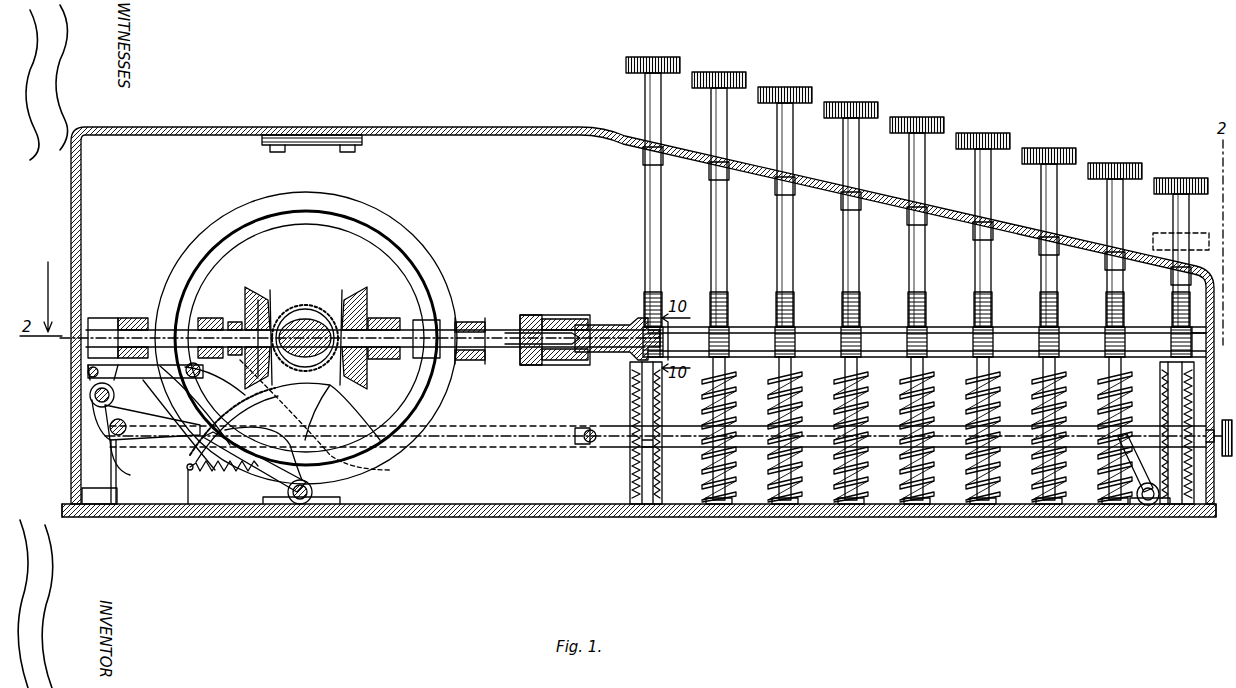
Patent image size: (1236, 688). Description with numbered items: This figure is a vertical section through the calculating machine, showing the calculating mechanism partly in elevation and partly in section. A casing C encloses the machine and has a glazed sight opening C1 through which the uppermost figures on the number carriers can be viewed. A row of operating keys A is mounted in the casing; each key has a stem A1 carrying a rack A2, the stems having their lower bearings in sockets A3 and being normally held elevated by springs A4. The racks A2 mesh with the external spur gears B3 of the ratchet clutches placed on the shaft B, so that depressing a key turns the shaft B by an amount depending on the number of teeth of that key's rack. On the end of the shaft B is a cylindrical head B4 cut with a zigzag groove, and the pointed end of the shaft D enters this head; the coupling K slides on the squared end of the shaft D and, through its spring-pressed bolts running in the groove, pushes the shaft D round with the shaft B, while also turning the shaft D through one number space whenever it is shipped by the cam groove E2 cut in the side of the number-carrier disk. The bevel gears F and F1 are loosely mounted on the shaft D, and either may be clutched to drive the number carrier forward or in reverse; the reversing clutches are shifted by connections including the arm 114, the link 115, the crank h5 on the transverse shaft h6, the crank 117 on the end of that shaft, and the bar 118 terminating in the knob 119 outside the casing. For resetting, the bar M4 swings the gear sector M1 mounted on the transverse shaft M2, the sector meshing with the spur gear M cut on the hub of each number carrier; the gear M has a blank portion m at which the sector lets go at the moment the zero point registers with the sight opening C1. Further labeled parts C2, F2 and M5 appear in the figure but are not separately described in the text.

The operating key A is at (657, 57).
The key stem A1 is at (662, 236).
The rack A2 is at (795, 283).
The socket A3 is at (648, 517).
The key spring A4 is at (725, 418).
The shaft B is at (752, 326).
The external spur gear B3 is at (796, 326).
The cylindrical head B4 is at (600, 318).
The casing C is at (532, 127).
The glazed opening C1 is at (320, 134).
The casing bearing C2 is at (425, 318).
The shaft D is at (492, 334).
The cam groove E2 is at (425, 272).
The bevel gear F is at (400, 235).
The bevel gear F1 is at (360, 310).
The gear flange F2 is at (240, 320).
The coupling K is at (547, 326).
The spur gear M is at (345, 292).
The blank portion m is at (303, 307).
The gear sector M1 is at (190, 500).
The transverse shaft M2 is at (303, 504).
The bar M4 is at (520, 450).
The lever M5 is at (1146, 506).
The crank h5 is at (146, 436).
The transverse shaft h6 is at (88, 395).
The arm 114 is at (194, 418).
The link 115 is at (145, 377).
The crank 117 is at (114, 472).
The bar 118 is at (202, 474).
The knob 119 is at (1226, 420).